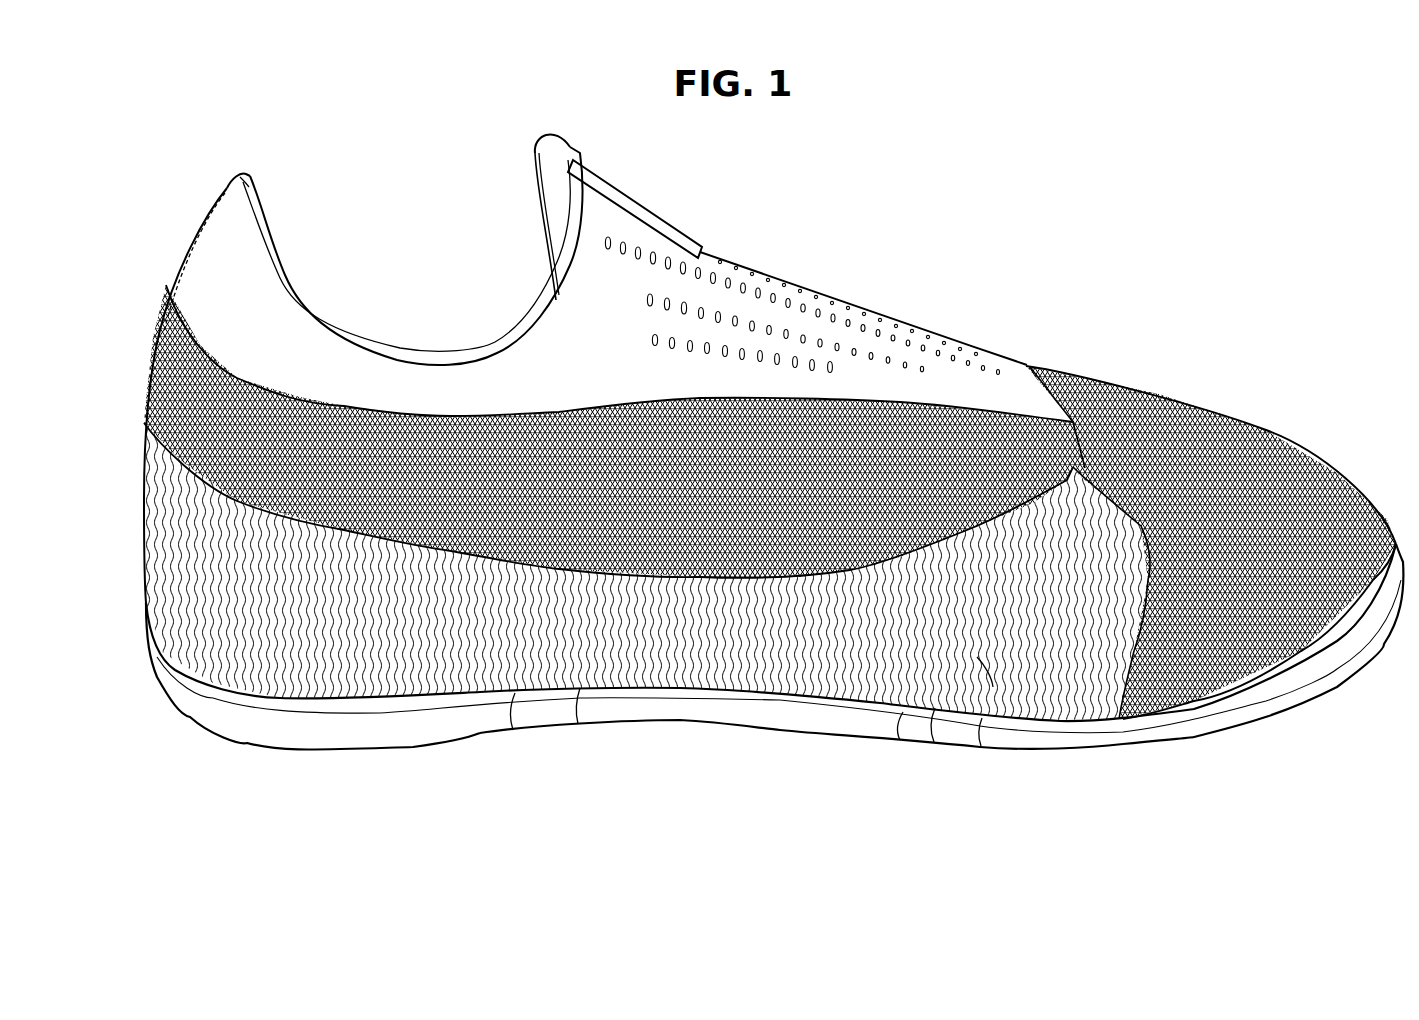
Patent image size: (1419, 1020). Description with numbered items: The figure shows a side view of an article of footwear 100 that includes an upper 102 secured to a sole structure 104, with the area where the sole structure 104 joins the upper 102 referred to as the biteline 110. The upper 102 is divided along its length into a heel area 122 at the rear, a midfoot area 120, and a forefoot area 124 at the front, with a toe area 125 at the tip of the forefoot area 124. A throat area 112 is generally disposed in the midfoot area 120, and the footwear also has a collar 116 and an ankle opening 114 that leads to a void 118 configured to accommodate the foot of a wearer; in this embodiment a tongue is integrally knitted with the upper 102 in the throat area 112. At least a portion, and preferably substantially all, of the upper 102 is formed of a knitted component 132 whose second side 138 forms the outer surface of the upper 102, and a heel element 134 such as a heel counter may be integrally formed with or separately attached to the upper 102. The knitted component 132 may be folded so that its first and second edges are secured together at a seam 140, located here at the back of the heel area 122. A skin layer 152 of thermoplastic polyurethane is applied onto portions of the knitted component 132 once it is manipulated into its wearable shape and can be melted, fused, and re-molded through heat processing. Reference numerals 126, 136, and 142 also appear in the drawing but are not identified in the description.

The article of footwear 100 is at (1040, 248).
The upper 102 is at (1237, 434).
The sole structure 104 is at (1191, 726).
The biteline 110 is at (901, 710).
The throat area 112 is at (753, 280).
The ankle opening 114 is at (277, 247).
The collar 116 is at (190, 267).
The void 118 is at (409, 316).
The midfoot area 120 is at (688, 727).
The heel area 122 is at (213, 760).
The forefoot area 124 is at (1280, 714).
The toe area 125 is at (1362, 612).
The midfoot portion of sole 126 is at (981, 718).
The knitted component 132 is at (1155, 405).
The heel element 134 is at (230, 185).
The collar edge 136 is at (247, 170).
The second side 138 is at (1337, 471).
The seam 140 is at (153, 318).
The transition seam 142 is at (1084, 437).
The skin layer 152 is at (610, 513).